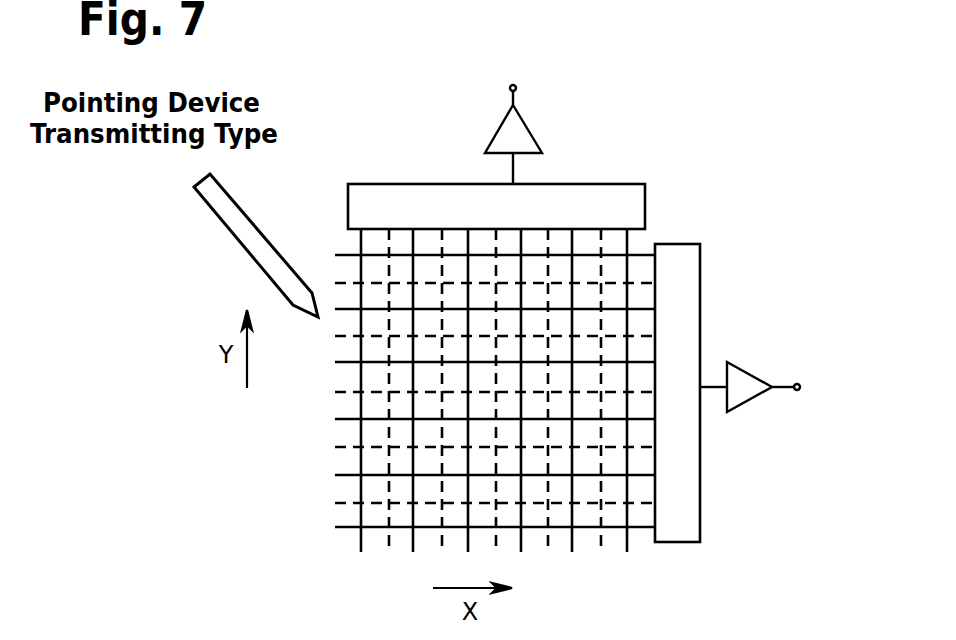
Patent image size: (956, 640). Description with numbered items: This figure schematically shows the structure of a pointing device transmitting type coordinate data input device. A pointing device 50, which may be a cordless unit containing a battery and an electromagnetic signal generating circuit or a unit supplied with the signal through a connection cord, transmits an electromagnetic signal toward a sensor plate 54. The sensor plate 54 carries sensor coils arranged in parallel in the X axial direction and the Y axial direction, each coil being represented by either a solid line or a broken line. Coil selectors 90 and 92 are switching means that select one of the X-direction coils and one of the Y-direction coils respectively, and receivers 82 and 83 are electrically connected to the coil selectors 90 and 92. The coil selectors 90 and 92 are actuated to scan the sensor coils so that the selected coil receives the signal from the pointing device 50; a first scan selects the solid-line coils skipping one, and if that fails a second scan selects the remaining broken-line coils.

The pointing device 50 is at (257, 225).
The sensor plate 54 is at (328, 402).
The receiver 82 is at (533, 128).
The receiver 83 is at (755, 400).
The coil selector 90 is at (646, 207).
The coil selector 92 is at (676, 543).